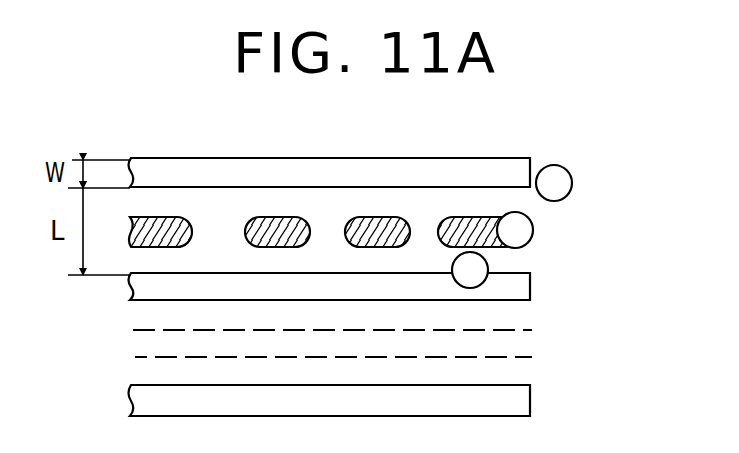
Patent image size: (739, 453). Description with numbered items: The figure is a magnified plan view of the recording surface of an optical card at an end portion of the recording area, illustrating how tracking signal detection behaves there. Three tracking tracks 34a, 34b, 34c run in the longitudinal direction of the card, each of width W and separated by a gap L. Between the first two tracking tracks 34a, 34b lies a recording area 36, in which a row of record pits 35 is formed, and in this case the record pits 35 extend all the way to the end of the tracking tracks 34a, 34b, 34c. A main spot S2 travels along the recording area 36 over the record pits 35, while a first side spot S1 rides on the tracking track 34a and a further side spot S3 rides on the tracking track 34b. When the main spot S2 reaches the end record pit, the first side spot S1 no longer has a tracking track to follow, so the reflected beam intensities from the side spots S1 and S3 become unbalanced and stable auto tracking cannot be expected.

The tracking track 34a is at (530, 165).
The tracking track 34b is at (520, 283).
The tracking track 34c is at (520, 400).
The record pits 35 is at (275, 217).
The recording area 36 is at (336, 200).
The first side spot S1 is at (558, 186).
The main spot S2 is at (516, 231).
The side spot S3 is at (474, 274).